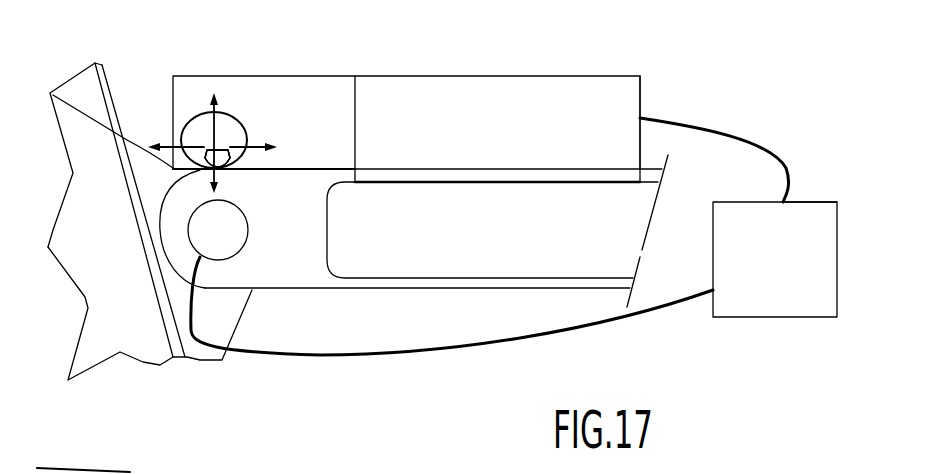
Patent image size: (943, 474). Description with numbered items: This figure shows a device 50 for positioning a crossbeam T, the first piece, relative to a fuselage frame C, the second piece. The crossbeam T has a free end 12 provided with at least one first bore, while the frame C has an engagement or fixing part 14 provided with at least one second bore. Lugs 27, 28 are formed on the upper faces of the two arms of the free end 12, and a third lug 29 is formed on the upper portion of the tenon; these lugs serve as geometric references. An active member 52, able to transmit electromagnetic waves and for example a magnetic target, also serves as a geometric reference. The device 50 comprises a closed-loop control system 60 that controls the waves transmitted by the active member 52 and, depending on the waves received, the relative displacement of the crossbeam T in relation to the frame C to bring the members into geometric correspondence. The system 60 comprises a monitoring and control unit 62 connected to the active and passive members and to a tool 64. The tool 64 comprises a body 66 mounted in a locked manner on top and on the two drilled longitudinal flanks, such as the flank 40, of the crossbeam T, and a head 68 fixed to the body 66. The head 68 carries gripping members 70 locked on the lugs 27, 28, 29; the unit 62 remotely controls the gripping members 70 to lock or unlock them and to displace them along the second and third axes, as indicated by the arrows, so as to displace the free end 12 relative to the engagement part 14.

The free end 12 is at (146, 205).
The engagement part 14 is at (150, 170).
The lug 27 is at (211, 148).
The lug 28 is at (217, 158).
The third lug 29 is at (217, 158).
The gripping members 70 is at (250, 104).
The head 68 is at (330, 93).
The body 66 is at (570, 100).
The tool 64 is at (647, 80).
The monitoring and control unit 62 is at (813, 202).
The flank 40 is at (618, 215).
The active member 52 is at (230, 230).
The closed-loop control system 60 is at (630, 338).
The device 50 is at (762, 341).
The fuselage frame C is at (102, 292).
The crossbeam T is at (452, 288).